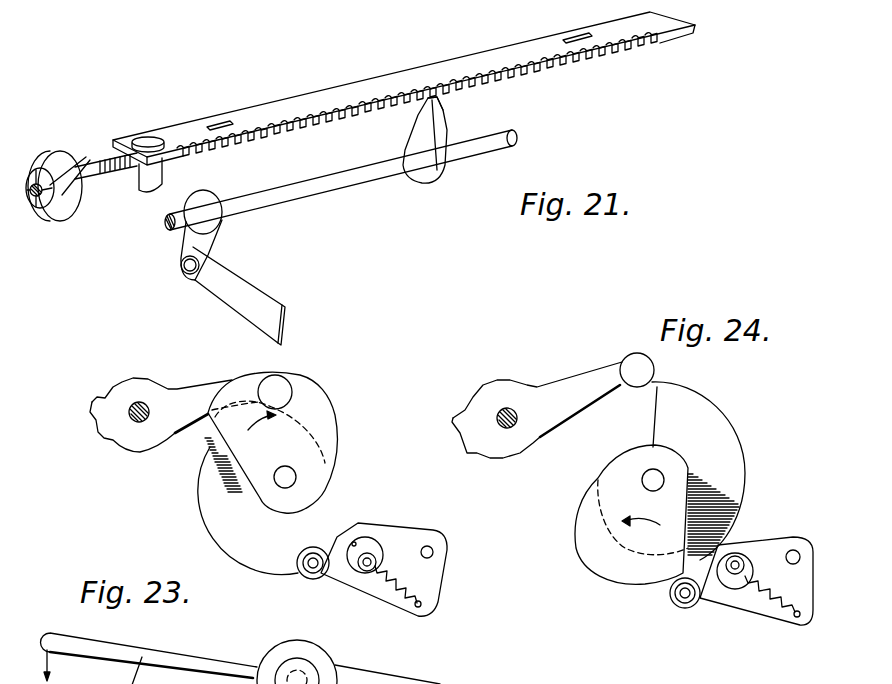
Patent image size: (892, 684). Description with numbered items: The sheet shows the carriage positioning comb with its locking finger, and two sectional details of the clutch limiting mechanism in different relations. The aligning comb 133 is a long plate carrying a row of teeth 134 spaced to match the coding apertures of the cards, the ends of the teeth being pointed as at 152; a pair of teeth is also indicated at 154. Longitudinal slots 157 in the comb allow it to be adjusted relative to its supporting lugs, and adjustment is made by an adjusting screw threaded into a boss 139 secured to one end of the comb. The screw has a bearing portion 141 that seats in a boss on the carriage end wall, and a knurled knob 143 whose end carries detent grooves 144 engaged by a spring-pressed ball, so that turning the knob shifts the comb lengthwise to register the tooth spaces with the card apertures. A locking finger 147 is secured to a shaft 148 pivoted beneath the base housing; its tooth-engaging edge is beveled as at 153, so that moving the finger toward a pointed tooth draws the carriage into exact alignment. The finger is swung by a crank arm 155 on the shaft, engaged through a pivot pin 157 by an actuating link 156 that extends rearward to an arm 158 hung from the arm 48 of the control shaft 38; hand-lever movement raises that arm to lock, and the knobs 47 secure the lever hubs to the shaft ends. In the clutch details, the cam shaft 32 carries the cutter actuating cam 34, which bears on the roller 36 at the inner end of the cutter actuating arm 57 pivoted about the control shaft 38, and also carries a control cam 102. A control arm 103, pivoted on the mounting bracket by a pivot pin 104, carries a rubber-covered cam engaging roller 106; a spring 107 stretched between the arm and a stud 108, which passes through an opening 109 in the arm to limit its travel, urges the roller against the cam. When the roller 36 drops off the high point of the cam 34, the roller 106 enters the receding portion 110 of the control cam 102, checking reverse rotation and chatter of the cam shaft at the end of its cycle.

In FIG. 21, the aligning comb 133 is at (284, 101).
In FIG. 21, the pivot pin 157 is at (220, 122).
In FIG. 21, the pointed ends of teeth 152 is at (316, 130).
In FIG. 21, the teeth 134 is at (256, 136).
In FIG. 21, the teeth 154 is at (542, 64).
In FIG. 21, the beveled edge 153 is at (438, 102).
In FIG. 21, the locking finger 147 is at (437, 128).
In FIG. 21, the shaft 148 is at (340, 180).
In FIG. 21, the crank arm 155 is at (203, 242).
In FIG. 21, the actuating link 156 is at (250, 296).
In FIG. 21, the arm 158 is at (98, 178).
In FIG. 21, the boss 139 is at (149, 186).
In FIG. 21, the detent grooves 144 is at (79, 166).
In FIG. 21, the knurled knob 143 is at (69, 218).
In FIG. 21, the bearing portion 141 is at (33, 205).
In FIG. 23, the cutter actuating cam 34 is at (222, 537).
In FIG. 24, the cutter actuating cam 34 is at (722, 424).
In FIG. 23, the control cam 102 is at (322, 409).
In FIG. 24, the control cam 102 is at (616, 563).
In FIG. 23, the receding portion 110 is at (214, 461).
In FIG. 24, the receding portion 110 is at (692, 507).
In FIG. 23, the arm 57 is at (197, 386).
In FIG. 24, the arm 57 is at (551, 386).
In FIG. 23, the control shaft 38 is at (142, 402).
In FIG. 24, the control shaft 38 is at (514, 428).
In FIG. 23, the cam shaft 32 is at (274, 480).
In FIG. 24, the cam shaft 32 is at (666, 476).
In FIG. 24, the roller 36 is at (613, 370).
In FIG. 23, the cam engaging roller 106 is at (300, 573).
In FIG. 24, the cam engaging roller 106 is at (684, 609).
In FIG. 23, the control arm 103 is at (349, 579).
In FIG. 24, the control arm 103 is at (757, 604).
In FIG. 23, the opening 109 is at (354, 540).
In FIG. 24, the opening 109 is at (727, 593).
In FIG. 23, the stud 108 is at (371, 556).
In FIG. 24, the stud 108 is at (741, 557).
In FIG. 23, the spring 107 is at (424, 601).
In FIG. 24, the spring 107 is at (788, 600).
In FIG. 23, the pivot pin 104 is at (434, 552).
In FIG. 24, the pivot pin 104 is at (794, 549).
In FIG. 23, the knob 47 is at (310, 670).
In FIG. 23, the arm 48 is at (424, 683).